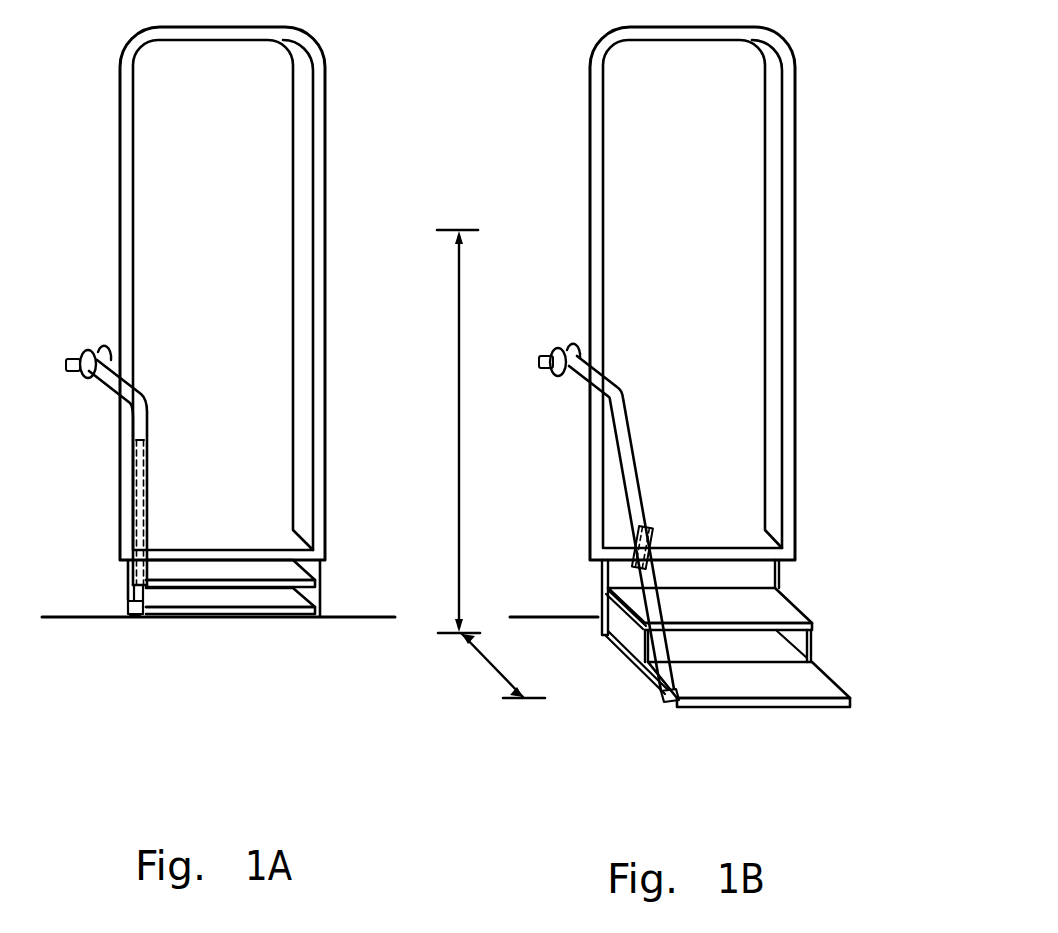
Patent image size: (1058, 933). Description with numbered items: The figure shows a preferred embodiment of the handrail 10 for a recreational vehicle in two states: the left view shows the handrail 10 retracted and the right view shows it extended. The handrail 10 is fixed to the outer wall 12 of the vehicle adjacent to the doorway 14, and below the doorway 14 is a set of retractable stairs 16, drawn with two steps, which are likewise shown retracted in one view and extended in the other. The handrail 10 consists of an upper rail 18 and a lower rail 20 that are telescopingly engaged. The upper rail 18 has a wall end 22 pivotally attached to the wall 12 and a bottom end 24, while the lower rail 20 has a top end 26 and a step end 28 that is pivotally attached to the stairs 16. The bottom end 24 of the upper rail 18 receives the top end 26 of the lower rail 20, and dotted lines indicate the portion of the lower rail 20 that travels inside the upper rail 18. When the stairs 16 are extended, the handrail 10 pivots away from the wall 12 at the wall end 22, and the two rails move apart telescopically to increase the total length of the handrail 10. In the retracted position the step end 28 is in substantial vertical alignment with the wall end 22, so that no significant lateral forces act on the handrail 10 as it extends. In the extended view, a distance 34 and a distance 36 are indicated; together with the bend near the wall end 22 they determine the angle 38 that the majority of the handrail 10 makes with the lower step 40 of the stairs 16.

In FIG. 1A, the handrail 10 is at (207, 482).
In FIG. 1B, the handrail 10 is at (725, 548).
In FIG. 1A, the outer wall 12 is at (87, 467).
In FIG. 1B, the outer wall 12 is at (560, 467).
In FIG. 1A, the doorway 14 is at (232, 168).
In FIG. 1B, the doorway 14 is at (717, 168).
In FIG. 1A, the retractable stairs 16 is at (279, 623).
In FIG. 1B, the retractable stairs 16 is at (725, 656).
In FIG. 1A, the upper rail 18 is at (134, 482).
In FIG. 1B, the upper rail 18 is at (629, 523).
In FIG. 1A, the lower rail 20 is at (128, 606).
In FIG. 1B, the lower rail 20 is at (670, 648).
In FIG. 1A, the wall end 22 is at (78, 343).
In FIG. 1B, the wall end 22 is at (559, 360).
In FIG. 1A, the bottom end 24 is at (128, 596).
In FIG. 1A, the top end 26 is at (146, 437).
In FIG. 1B, the top end 26 is at (642, 547).
In FIG. 1A, the step end 28 is at (133, 618).
In FIG. 1B, the distance 34 is at (495, 668).
In FIG. 1B, the distance 36 is at (458, 393).
In FIG. 1B, the angle 38 is at (629, 633).
In FIG. 1B, the lower step 40 is at (777, 707).